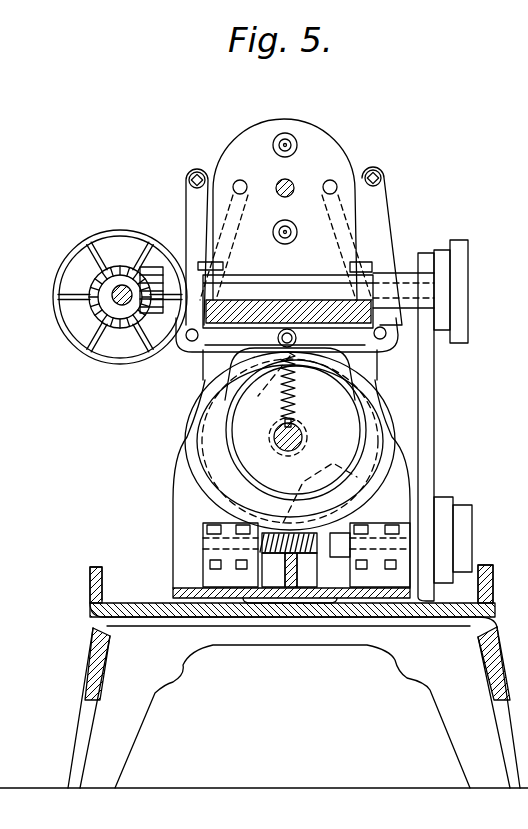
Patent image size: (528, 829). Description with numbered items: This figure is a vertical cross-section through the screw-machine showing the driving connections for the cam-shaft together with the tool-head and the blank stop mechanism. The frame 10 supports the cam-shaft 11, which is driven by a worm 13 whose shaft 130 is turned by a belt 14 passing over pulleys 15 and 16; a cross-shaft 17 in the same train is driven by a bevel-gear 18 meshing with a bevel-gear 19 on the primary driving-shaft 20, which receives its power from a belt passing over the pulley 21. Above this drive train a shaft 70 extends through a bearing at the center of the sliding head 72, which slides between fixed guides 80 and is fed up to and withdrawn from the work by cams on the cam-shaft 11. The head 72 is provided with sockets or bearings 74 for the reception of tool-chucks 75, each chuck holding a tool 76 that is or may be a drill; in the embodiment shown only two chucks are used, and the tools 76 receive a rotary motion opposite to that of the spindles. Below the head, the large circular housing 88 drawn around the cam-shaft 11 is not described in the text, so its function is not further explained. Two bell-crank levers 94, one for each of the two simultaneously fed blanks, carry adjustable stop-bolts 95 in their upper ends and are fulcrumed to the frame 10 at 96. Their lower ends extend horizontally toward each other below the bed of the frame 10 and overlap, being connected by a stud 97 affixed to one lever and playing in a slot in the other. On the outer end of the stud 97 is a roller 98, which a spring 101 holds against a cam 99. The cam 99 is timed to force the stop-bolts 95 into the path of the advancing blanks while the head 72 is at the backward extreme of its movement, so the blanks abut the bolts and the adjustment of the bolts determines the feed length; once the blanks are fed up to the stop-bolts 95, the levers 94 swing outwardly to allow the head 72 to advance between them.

The frame 10 is at (176, 512).
The cam-shaft 11 is at (306, 438).
The worm 13 is at (297, 556).
The shaft 130 is at (338, 550).
The belt 14 is at (436, 433).
The pulley 15 is at (466, 529).
The pulley 16 is at (456, 320).
The cross-shaft 17 is at (462, 270).
The bevel-gear 18 is at (151, 266).
The bevel-gear 19 is at (121, 262).
The primary driving-shaft 20 is at (96, 299).
The pulley 21 is at (66, 248).
The shaft 70 is at (279, 182).
The sliding head 72 is at (337, 136).
The sockets or bearings 74 is at (234, 184).
The tool-chucks 75 is at (292, 135).
The tool 76 is at (280, 134).
The fixed guides 80 is at (225, 265).
The ring housing 88 is at (222, 438).
The bell-crank levers 94 is at (190, 203).
The adjustable stop-bolts 95 is at (196, 175).
The fulcrums 96 is at (189, 340).
The stud 97 is at (301, 439).
The roller 98 is at (277, 339).
The cam 99 is at (206, 472).
The spring 101 is at (300, 384).